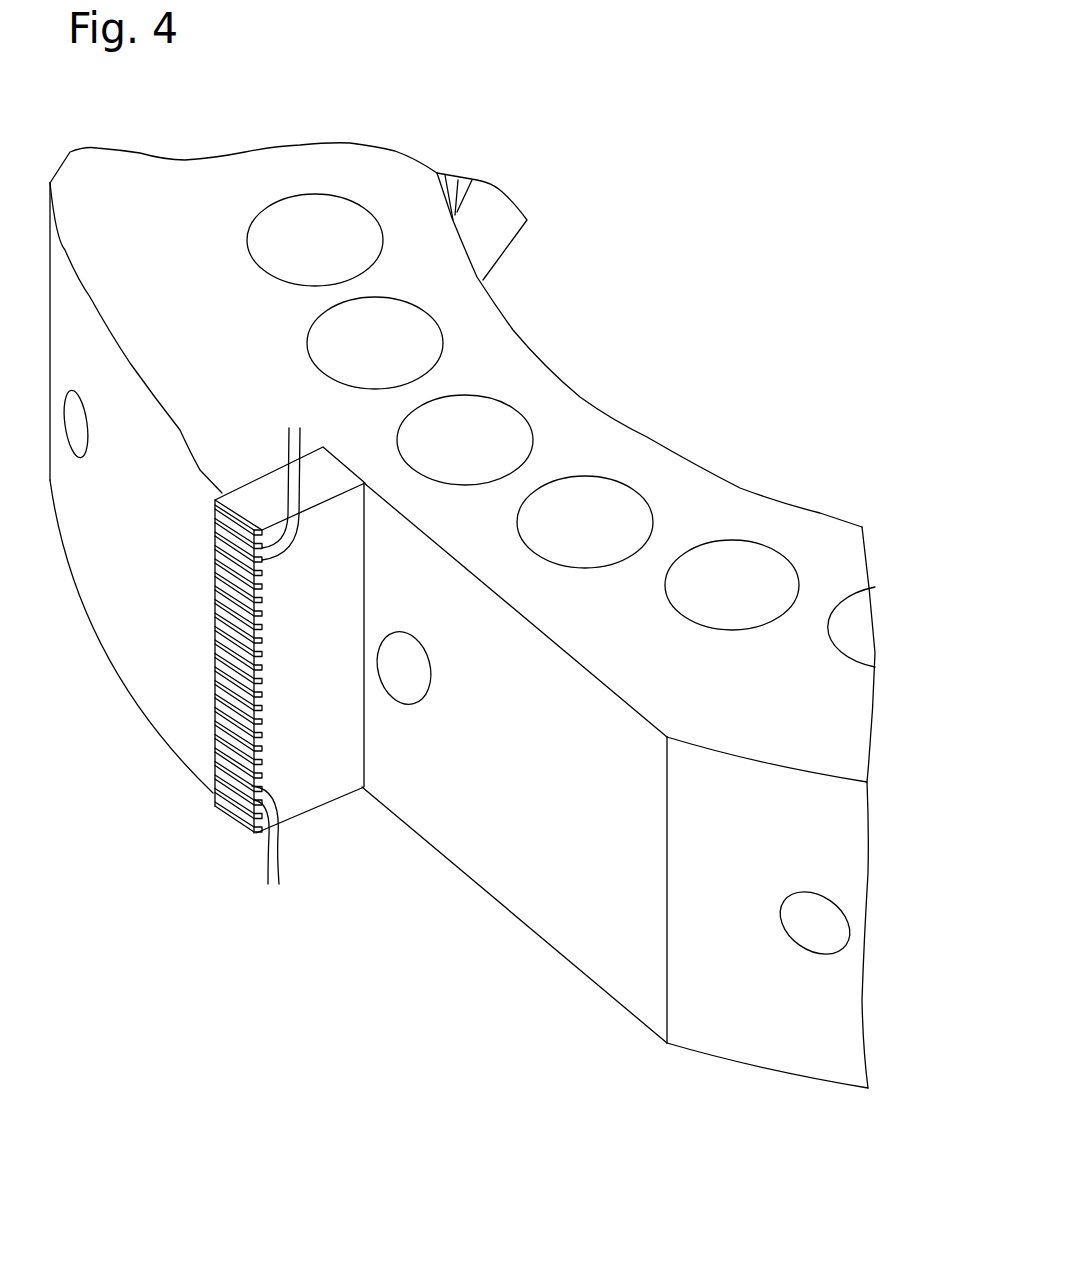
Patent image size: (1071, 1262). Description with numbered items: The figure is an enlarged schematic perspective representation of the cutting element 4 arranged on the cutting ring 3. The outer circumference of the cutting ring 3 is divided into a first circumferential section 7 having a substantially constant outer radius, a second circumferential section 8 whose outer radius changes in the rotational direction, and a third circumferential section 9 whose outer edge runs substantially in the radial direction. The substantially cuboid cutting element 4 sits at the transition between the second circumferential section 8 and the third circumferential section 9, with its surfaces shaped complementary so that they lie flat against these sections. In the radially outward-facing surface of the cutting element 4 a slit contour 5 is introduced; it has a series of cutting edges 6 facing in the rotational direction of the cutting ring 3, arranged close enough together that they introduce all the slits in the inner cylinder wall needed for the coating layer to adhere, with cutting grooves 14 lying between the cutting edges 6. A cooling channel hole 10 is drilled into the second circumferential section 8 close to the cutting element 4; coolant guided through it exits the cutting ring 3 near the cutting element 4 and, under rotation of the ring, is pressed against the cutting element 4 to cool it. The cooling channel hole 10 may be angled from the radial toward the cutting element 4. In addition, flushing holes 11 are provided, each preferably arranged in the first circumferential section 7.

The cutting ring 3 is at (102, 610).
The cutting element 4 is at (317, 777).
The slit contour 5 is at (220, 717).
The cutting edges 6 is at (310, 620).
The first circumferential section 7 is at (740, 1012).
The second circumferential section 8 is at (553, 890).
The third circumferential section 9 is at (257, 483).
The cooling channel hole 10 is at (407, 682).
The flushing holes 11 is at (823, 937).
The cutting grooves 14 is at (287, 476).